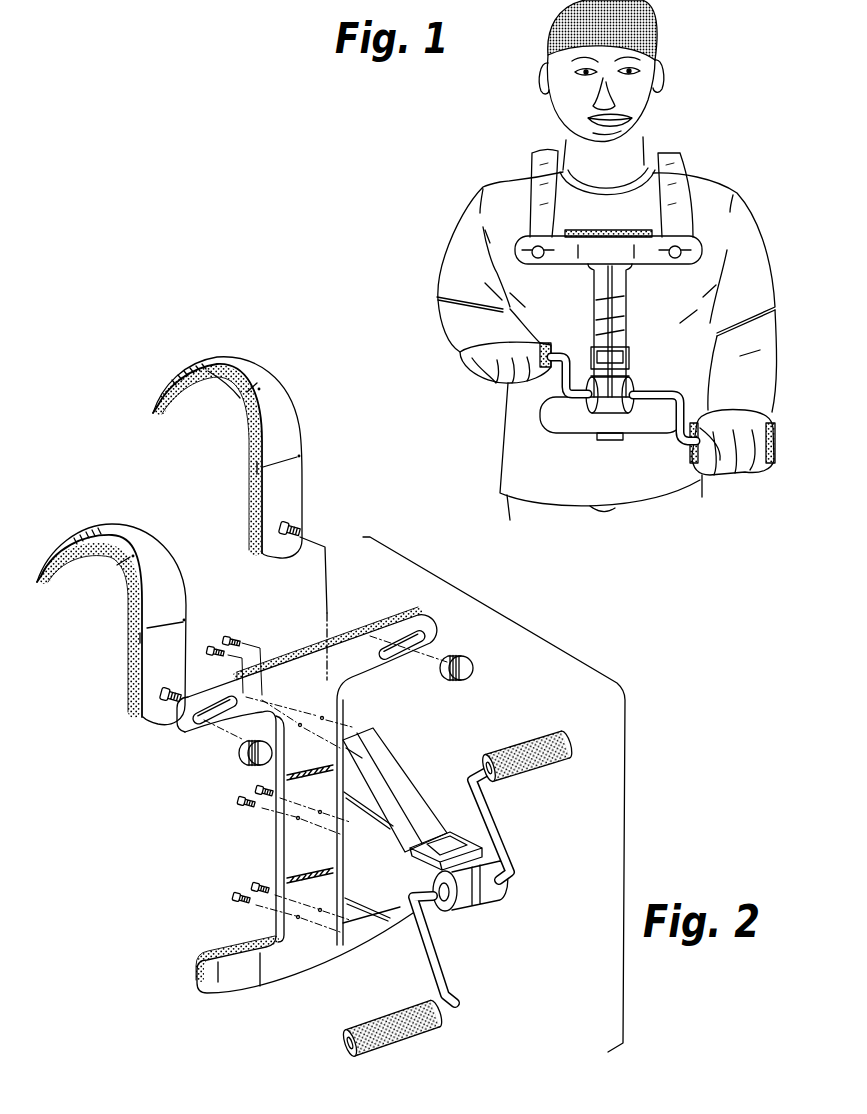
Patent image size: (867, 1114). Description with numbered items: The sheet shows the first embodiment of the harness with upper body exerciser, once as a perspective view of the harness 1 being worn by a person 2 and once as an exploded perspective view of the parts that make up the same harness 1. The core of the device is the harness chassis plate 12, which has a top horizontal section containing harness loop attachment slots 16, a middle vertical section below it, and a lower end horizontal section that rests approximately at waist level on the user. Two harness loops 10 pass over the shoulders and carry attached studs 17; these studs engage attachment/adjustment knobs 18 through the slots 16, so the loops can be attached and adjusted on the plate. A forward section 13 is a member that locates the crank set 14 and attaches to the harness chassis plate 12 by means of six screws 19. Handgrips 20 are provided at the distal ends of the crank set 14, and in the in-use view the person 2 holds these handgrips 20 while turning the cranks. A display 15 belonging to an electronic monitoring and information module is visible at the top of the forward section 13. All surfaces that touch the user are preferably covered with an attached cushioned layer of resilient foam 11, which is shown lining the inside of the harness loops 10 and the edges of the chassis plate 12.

In FIG. 1, the harness 1 is at (695, 200).
In FIG. 2, the harness 1 is at (112, 838).
In FIG. 1, the person 2 is at (453, 240).
In FIG. 2, the harness loops 10 is at (210, 366).
In FIG. 2, the resilient foam 11 is at (178, 412).
In FIG. 2, the harness chassis plate 12 is at (290, 975).
In FIG. 2, the forward section 13 is at (398, 775).
In FIG. 2, the crank set 14 is at (503, 868).
In FIG. 2, the display 15 is at (450, 836).
In FIG. 2, the harness loop attachment slots 16 is at (202, 725).
In FIG. 2, the studs 17 is at (292, 520).
In FIG. 2, the attachment/adjustment knobs 18 is at (472, 658).
In FIG. 2, the screws 19 is at (215, 626).
In FIG. 2, the handgrips 20 is at (548, 740).